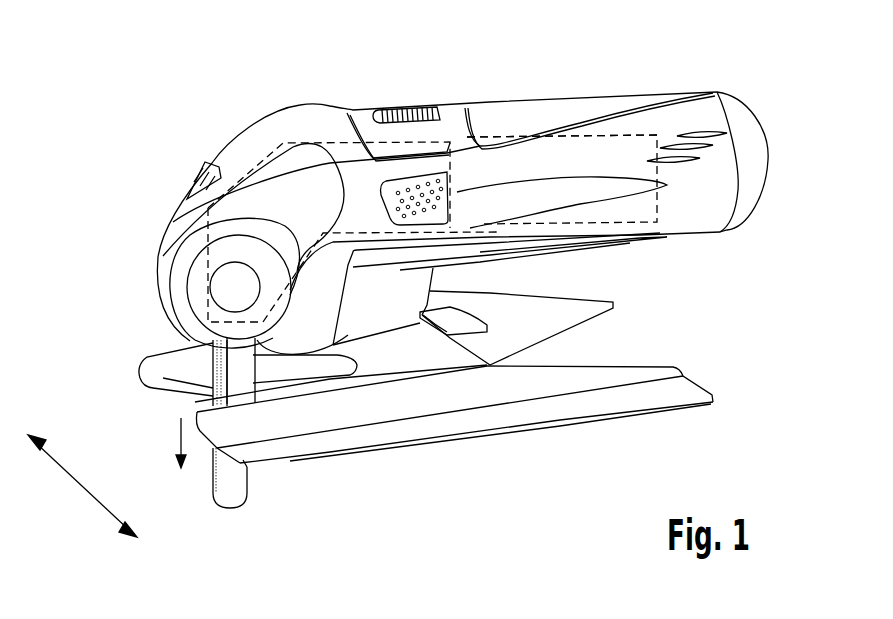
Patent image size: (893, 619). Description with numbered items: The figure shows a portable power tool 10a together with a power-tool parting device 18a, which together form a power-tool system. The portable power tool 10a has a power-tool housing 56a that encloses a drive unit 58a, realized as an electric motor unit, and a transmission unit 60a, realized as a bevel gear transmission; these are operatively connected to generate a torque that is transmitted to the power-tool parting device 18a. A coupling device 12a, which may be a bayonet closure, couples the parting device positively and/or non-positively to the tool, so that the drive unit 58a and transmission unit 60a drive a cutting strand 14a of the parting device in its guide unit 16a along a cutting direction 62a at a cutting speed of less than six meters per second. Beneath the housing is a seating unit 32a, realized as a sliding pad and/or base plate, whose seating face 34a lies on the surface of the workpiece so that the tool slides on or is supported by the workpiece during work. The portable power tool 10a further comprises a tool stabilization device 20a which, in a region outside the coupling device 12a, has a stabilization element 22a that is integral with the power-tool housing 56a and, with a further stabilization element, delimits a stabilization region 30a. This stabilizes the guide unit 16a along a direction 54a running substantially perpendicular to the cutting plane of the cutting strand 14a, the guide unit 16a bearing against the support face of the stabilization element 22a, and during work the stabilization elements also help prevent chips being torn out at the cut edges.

The portable power tool 10a is at (678, 73).
The coupling device 12a is at (133, 289).
The cutting strand 14a is at (213, 470).
The guide unit 16a is at (232, 472).
The power-tool parting device 18a is at (210, 502).
The tool stabilization device 20a is at (257, 381).
The stabilization element 22a is at (237, 388).
The stabilization region 30a is at (165, 400).
The seating unit 32a is at (415, 462).
The seating face 34a is at (567, 423).
The direction 54a is at (77, 487).
The power-tool housing 56a is at (507, 113).
The drive unit 58a is at (585, 133).
The transmission unit 60a is at (321, 143).
The cutting direction 62a is at (178, 433).